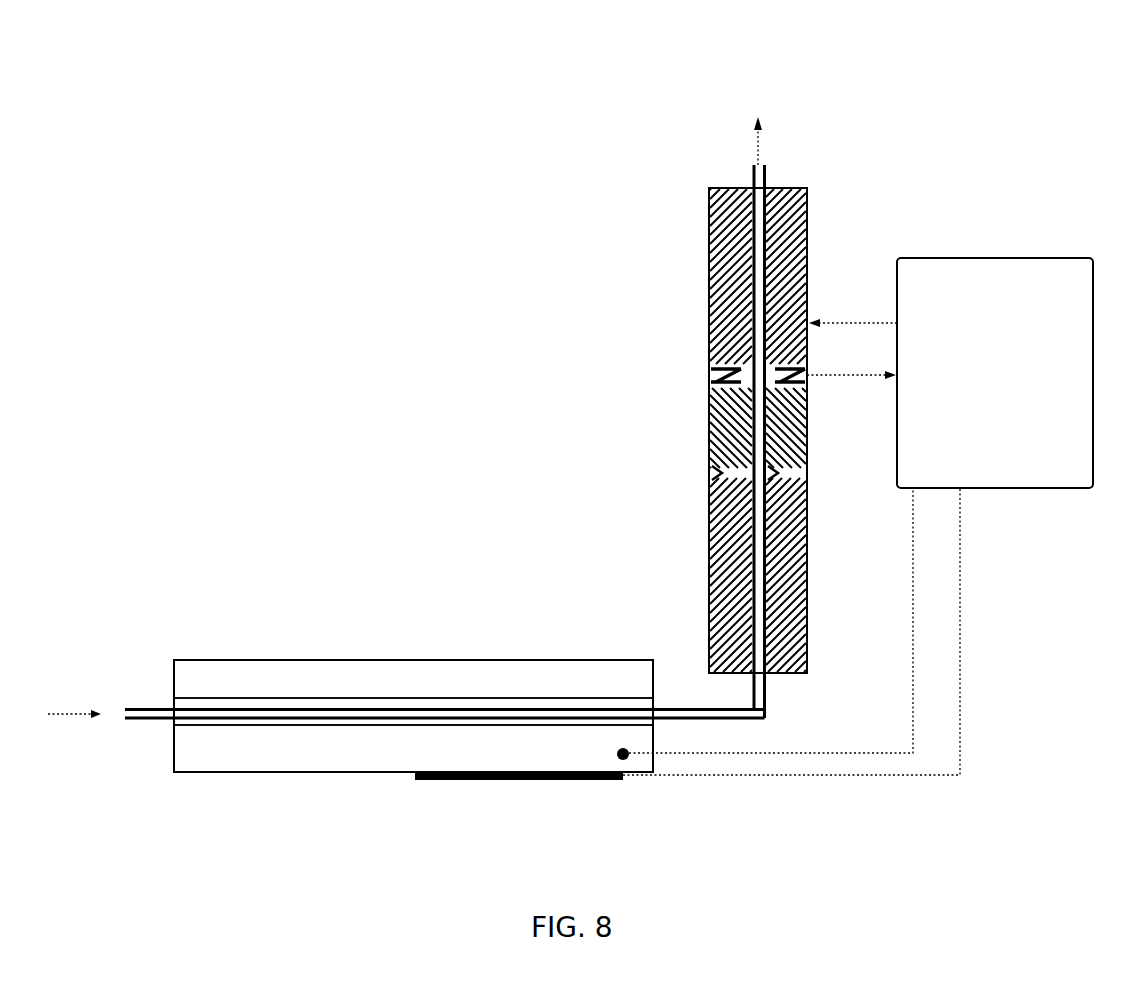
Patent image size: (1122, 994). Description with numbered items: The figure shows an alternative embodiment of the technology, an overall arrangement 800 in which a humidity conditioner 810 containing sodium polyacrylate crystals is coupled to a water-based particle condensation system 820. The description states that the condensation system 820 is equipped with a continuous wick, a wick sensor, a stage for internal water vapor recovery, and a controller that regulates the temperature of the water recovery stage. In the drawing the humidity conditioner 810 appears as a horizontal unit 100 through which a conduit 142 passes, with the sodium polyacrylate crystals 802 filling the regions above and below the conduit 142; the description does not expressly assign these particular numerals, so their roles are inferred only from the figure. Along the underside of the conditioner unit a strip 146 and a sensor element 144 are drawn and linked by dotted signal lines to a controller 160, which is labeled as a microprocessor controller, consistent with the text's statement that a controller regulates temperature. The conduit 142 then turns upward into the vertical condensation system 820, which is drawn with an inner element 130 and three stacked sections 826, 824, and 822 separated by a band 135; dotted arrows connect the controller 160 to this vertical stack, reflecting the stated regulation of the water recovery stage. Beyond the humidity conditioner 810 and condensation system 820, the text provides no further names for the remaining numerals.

The sample processing system 800 is at (730, 38).
The tubing / fluid conduit 142 is at (756, 148).
The heating element 130 is at (732, 244).
The water-based particle condensation system 820 is at (808, 222).
The upper heater block section 826 is at (702, 293).
The heater band / ring 135 is at (700, 375).
The middle heater block section 824 is at (700, 414).
The lower heater block section 822 is at (700, 526).
The microprocessor controller 160 is at (1009, 456).
The sample collection device 100 is at (423, 656).
The sodium polyacrylate crystals 802 is at (262, 660).
The humidity conditioner 810 is at (511, 660).
The heater strip 146 is at (590, 781).
The temperature sensor 144 is at (624, 761).